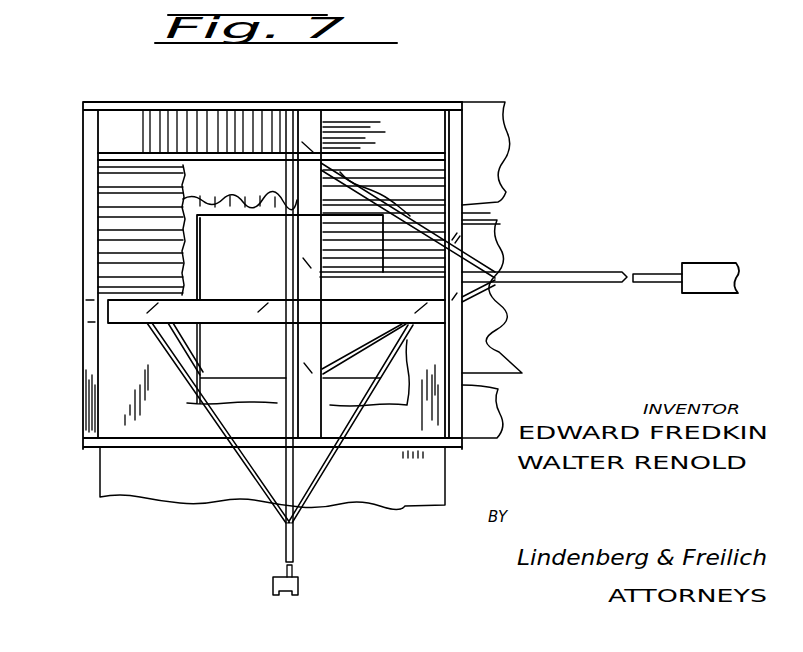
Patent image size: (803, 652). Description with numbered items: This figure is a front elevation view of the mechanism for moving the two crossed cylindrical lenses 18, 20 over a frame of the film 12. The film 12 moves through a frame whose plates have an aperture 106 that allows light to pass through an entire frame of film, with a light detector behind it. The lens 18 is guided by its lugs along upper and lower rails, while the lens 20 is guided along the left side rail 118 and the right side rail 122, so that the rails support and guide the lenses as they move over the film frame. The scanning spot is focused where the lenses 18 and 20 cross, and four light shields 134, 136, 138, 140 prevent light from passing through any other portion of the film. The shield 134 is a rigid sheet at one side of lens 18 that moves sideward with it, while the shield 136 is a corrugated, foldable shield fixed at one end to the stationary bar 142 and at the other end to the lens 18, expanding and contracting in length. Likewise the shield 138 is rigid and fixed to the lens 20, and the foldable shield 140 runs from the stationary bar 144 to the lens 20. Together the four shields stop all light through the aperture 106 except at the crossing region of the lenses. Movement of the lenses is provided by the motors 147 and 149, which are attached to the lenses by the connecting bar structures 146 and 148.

The film 12 is at (515, 253).
The cylindrical lens 18 is at (311, 430).
The cylindrical lens 20 is at (130, 322).
The aperture 106 is at (202, 270).
The left side rail 118 is at (88, 218).
The right side rail 122 is at (462, 110).
The light shield 134 is at (395, 125).
The foldable light shield 136 is at (198, 122).
The light shield 138 is at (108, 402).
The foldable light shield 140 is at (108, 262).
The stationary bar 142 is at (146, 122).
The stationary bar 144 is at (98, 153).
The connecting bar structure 146 is at (647, 274).
The motor 147 is at (717, 266).
The connecting bar structure 148 is at (294, 542).
The motor 149 is at (299, 587).